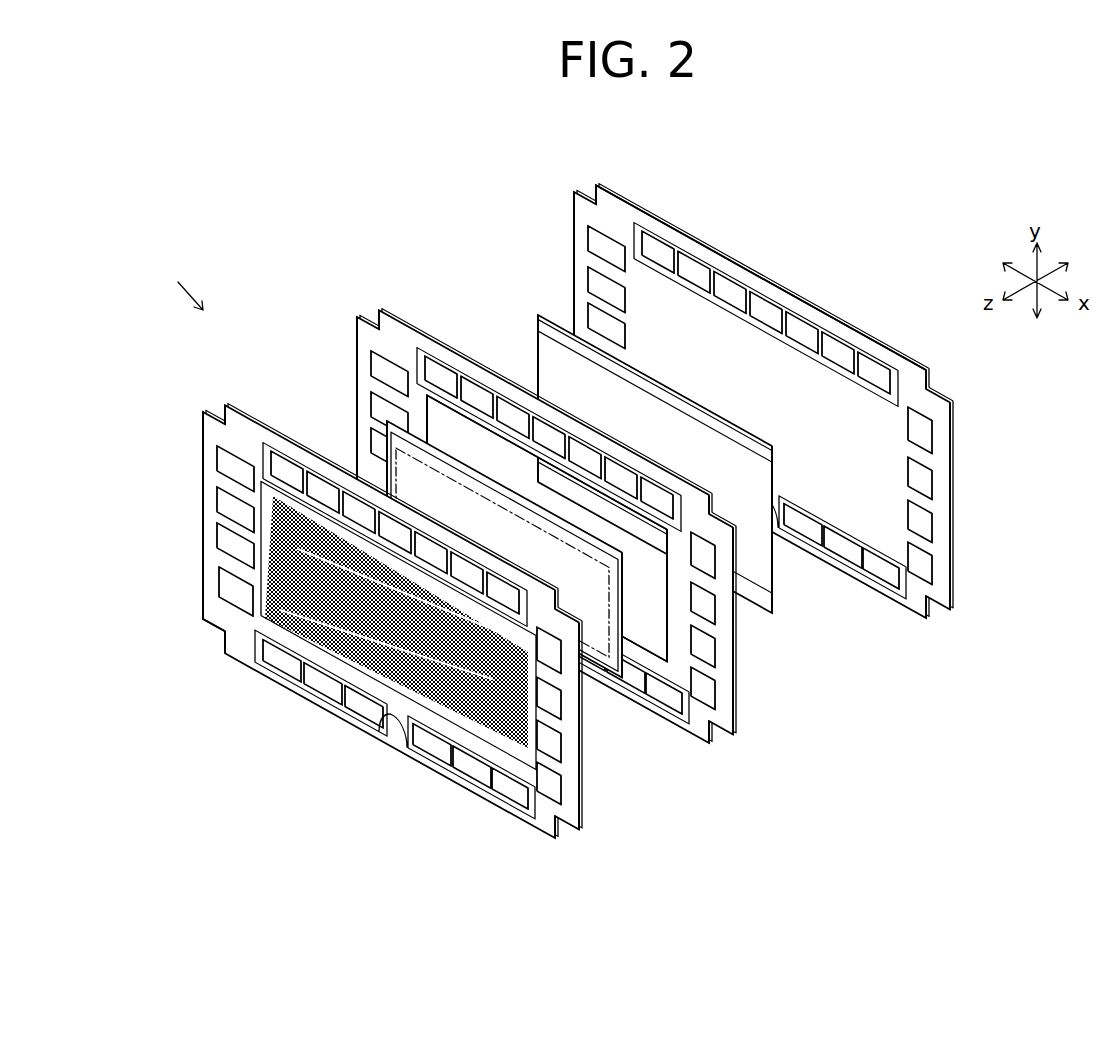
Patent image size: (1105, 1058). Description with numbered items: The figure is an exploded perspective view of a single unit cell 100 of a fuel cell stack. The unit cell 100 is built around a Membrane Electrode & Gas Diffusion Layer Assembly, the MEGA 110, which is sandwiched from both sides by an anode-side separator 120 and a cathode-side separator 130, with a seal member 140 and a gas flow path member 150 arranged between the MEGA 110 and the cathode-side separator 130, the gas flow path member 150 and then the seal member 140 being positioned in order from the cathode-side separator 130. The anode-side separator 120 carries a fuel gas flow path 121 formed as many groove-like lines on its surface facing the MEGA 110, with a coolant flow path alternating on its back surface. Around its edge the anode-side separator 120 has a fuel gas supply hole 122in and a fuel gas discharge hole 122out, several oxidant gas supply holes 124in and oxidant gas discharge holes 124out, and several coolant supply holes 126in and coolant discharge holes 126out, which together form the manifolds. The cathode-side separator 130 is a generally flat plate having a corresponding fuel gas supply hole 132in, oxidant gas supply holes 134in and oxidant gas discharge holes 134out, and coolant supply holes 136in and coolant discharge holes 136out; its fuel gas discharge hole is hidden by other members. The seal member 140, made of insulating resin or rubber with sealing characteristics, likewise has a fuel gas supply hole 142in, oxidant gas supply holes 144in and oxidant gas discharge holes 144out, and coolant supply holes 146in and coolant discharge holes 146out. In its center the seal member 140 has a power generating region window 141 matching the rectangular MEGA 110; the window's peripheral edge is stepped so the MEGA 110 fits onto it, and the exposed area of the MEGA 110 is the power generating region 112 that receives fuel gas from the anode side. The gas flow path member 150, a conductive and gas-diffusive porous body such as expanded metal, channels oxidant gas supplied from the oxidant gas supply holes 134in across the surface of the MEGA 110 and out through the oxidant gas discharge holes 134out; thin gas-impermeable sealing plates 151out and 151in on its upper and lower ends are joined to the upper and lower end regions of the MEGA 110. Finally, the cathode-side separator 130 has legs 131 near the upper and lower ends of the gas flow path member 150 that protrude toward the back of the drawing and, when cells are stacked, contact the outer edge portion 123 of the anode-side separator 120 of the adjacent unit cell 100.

The unit cell 100 is at (165, 287).
The Membrane Electrode & Gas Diffusion Layer Assembly (MEGA) 110 is at (632, 690).
The power generating region 112 is at (470, 510).
The anode-side separator 120 is at (553, 823).
The fuel gas flow path 121 is at (250, 617).
The fuel gas supply hole 122in is at (560, 648).
The fuel gas discharge hole 122out is at (232, 591).
The outer edge portion 123 is at (203, 618).
The oxidant gas supply holes 124in is at (510, 789).
The oxidant gas discharge holes 124out is at (467, 573).
The coolant supply holes 126in is at (577, 780).
The coolant discharge holes 126out is at (235, 546).
The cathode-side separator 130 is at (909, 360).
The legs 131 is at (837, 383).
The fuel gas supply hole 132in is at (933, 440).
The oxidant gas supply holes 134in is at (881, 569).
The oxidant gas discharge holes 134out is at (838, 353).
The coolant supply holes 136in is at (920, 563).
The coolant discharge holes 136out is at (606, 326).
The seal member 140 is at (731, 702).
The power generating region window 141 is at (537, 476).
The fuel gas supply hole 142in is at (698, 550).
The oxidant gas supply holes 144in is at (683, 710).
The oxidant gas discharge holes 144out is at (513, 417).
The coolant supply holes 146in is at (703, 688).
The coolant discharge holes 146out is at (389, 451).
The gas flow path member 150 is at (675, 458).
The sealing plate 151in is at (765, 600).
The sealing plate 151out is at (537, 330).